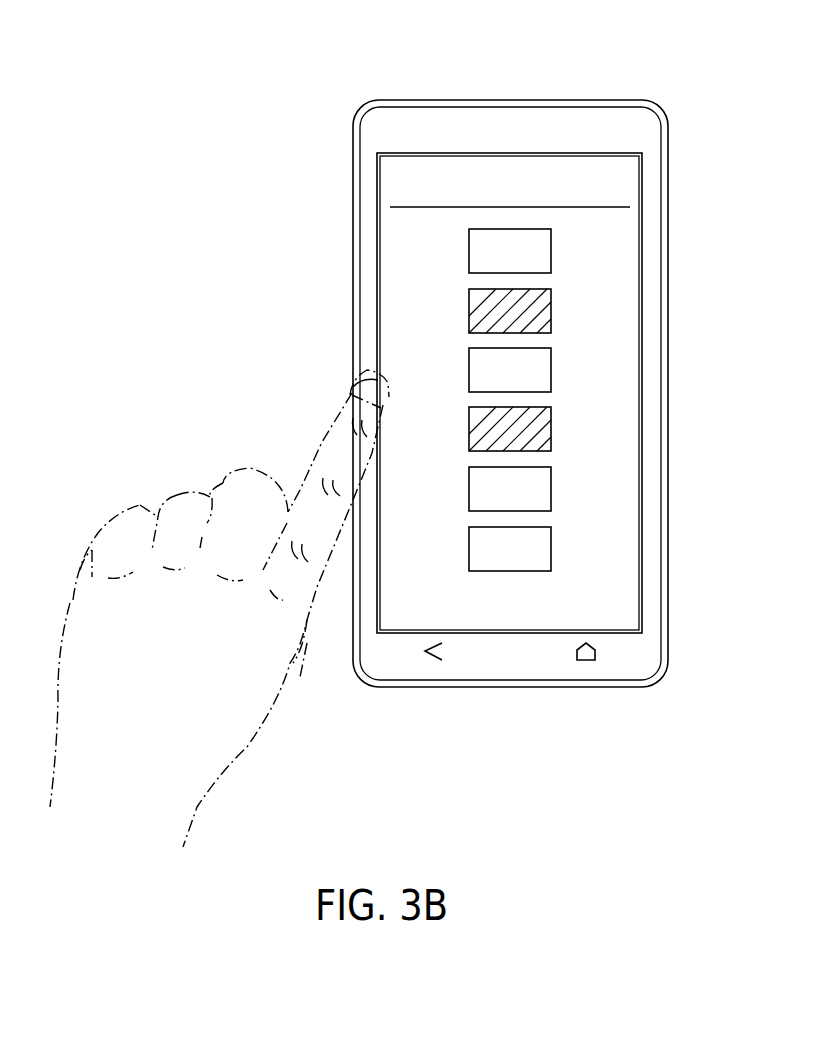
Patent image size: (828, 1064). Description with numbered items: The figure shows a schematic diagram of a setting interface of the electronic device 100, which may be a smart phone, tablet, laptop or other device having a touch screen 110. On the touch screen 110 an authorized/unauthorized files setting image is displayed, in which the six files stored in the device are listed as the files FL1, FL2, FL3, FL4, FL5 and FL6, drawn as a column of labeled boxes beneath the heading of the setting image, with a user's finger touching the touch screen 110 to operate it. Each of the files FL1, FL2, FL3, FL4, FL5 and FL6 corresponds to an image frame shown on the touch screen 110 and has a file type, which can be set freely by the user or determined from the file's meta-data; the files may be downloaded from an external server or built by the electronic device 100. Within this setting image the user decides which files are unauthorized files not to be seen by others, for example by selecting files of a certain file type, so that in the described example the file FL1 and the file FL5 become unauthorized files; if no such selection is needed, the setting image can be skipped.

The electronic device 100 is at (345, 81).
The touch screen 110 is at (619, 226).
The file FL1 is at (510, 251).
The file FL2 is at (510, 311).
The file FL3 is at (510, 370).
The file FL4 is at (510, 429).
The file FL5 is at (510, 489).
The file FL6 is at (510, 549).